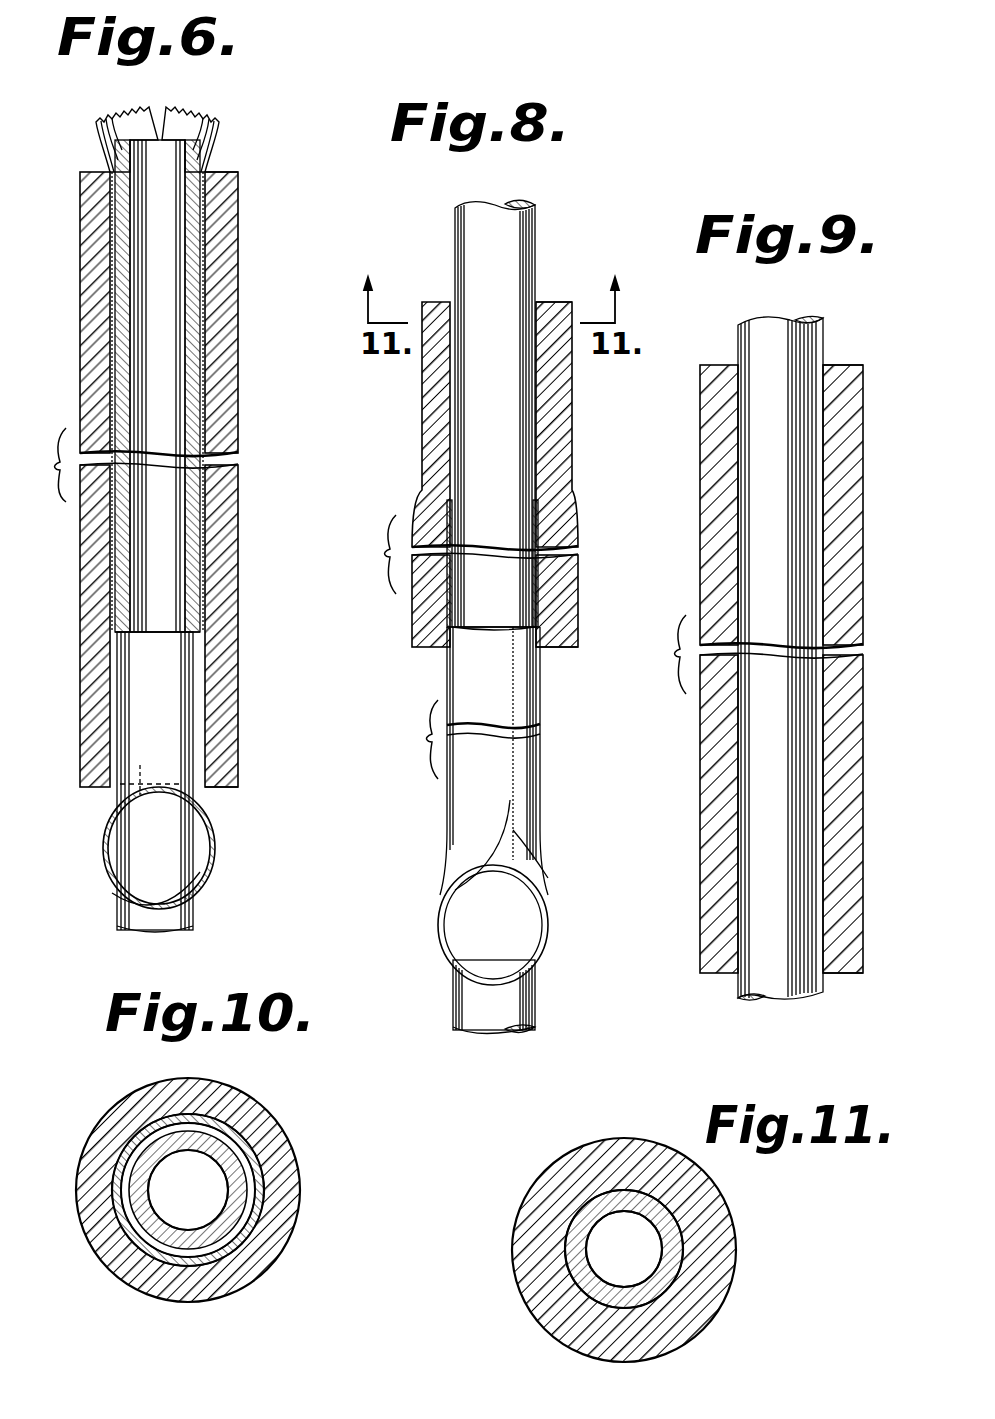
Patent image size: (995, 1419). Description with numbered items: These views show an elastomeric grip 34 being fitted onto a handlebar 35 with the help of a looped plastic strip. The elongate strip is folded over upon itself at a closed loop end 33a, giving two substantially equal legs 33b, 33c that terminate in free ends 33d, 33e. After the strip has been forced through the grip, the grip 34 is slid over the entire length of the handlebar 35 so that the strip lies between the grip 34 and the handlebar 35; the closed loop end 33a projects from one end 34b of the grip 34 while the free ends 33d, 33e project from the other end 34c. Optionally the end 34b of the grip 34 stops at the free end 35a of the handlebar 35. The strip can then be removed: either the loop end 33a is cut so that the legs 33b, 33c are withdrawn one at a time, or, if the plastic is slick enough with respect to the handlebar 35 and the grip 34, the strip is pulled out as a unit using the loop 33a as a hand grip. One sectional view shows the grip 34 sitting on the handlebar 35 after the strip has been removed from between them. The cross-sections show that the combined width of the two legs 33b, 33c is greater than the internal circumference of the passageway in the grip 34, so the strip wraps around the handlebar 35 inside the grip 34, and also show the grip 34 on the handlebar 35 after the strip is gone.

In FIG. 6, the closed loop end 33a is at (137, 903).
In FIG. 8, the closed loop end 33a is at (470, 982).
In FIG. 6, the leg of strip 33b is at (110, 723).
In FIG. 8, the leg of strip 33b is at (465, 798).
In FIG. 10, the leg of strip 33b is at (150, 1120).
In FIG. 6, the leg of strip 33c is at (217, 715).
In FIG. 8, the leg of strip 33c is at (530, 798).
In FIG. 10, the leg of strip 33c is at (255, 1192).
In FIG. 6, the free end of strip 33d is at (127, 107).
In FIG. 8, the free end of strip 33d is at (450, 508).
In FIG. 6, the free end of strip 33e is at (198, 107).
In FIG. 8, the free end of strip 33e is at (547, 503).
In FIG. 6, the elastomeric grip 34 is at (227, 505).
In FIG. 8, the elastomeric grip 34 is at (568, 427).
In FIG. 9, the elastomeric grip 34 is at (857, 593).
In FIG. 10, the elastomeric grip 34 is at (237, 1287).
In FIG. 11, the elastomeric grip 34 is at (572, 1335).
In FIG. 6, the end of grip 34b is at (220, 787).
In FIG. 8, the end of grip 34b is at (555, 648).
In FIG. 9, the end of grip 34b is at (843, 975).
In FIG. 6, the other end of grip 34c is at (230, 172).
In FIG. 8, the other end of grip 34c is at (555, 300).
In FIG. 9, the other end of grip 34c is at (842, 365).
In FIG. 6, the handlebar 35 is at (163, 630).
In FIG. 8, the handlebar 35 is at (475, 246).
In FIG. 9, the handlebar 35 is at (767, 502).
In FIG. 10, the handlebar 35 is at (218, 1163).
In FIG. 11, the handlebar 35 is at (655, 1220).
In FIG. 6, the free end of handlebar 35a is at (151, 769).